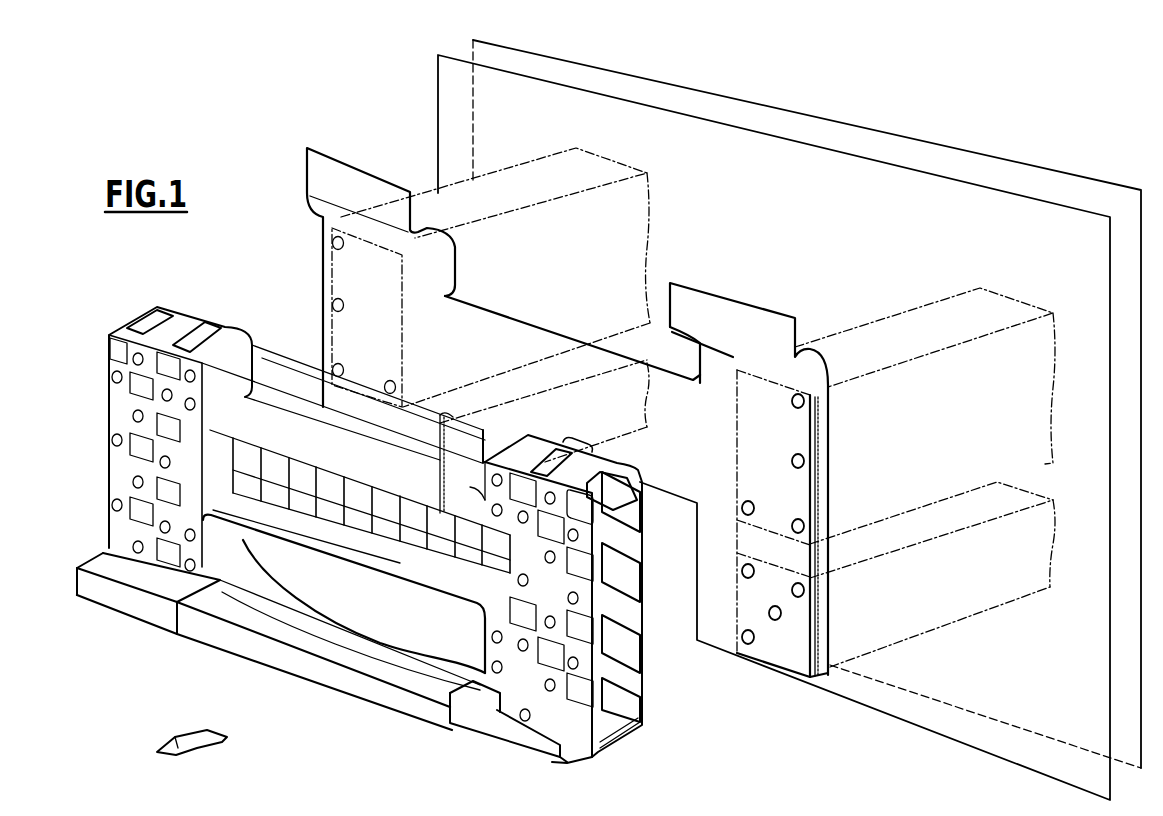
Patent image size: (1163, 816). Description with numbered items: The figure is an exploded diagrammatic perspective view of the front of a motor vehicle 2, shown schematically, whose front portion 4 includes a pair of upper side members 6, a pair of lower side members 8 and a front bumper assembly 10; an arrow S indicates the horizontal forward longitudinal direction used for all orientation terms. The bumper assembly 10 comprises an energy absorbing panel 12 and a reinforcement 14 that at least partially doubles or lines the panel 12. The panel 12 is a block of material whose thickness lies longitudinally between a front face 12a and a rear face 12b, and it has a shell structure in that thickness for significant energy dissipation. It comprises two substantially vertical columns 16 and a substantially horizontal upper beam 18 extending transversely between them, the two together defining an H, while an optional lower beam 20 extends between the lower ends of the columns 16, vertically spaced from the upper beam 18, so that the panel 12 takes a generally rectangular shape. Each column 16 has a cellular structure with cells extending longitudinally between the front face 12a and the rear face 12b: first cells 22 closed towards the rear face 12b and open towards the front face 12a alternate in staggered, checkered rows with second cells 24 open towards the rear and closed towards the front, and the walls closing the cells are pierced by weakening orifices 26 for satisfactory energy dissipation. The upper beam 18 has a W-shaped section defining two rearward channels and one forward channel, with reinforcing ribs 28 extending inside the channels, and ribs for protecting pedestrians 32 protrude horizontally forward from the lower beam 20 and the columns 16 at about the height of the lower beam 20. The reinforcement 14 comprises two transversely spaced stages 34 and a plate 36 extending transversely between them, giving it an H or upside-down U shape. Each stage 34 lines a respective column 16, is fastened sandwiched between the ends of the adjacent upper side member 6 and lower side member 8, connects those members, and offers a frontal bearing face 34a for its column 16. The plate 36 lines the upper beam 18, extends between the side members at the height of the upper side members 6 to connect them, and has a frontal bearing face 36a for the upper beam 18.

The motor vehicle 2 is at (877, 131).
The front portion 4 is at (438, 138).
The upper side members 6 is at (523, 182).
The lower side members 8 is at (634, 430).
The front bumper assembly 10 is at (907, 709).
The energy absorbing panel 12 is at (402, 509).
The front face 12a is at (110, 395).
The rear face 12b is at (222, 328).
The reinforcement 14 is at (823, 684).
The columns 16 is at (137, 537).
The upper beam 18 is at (363, 570).
The lower beam 20 is at (233, 663).
The first cells 22 is at (582, 630).
The second cells 24 is at (578, 527).
The weakening orifices 26 is at (110, 450).
The reinforcing ribs 28 is at (267, 470).
The ribs for protecting pedestrians 32 is at (220, 633).
The stages 34 is at (582, 475).
The frontal bearing face 34a is at (363, 325).
The plate 36 is at (567, 277).
The frontal bearing face 36a is at (500, 335).
The arrow S is at (212, 746).